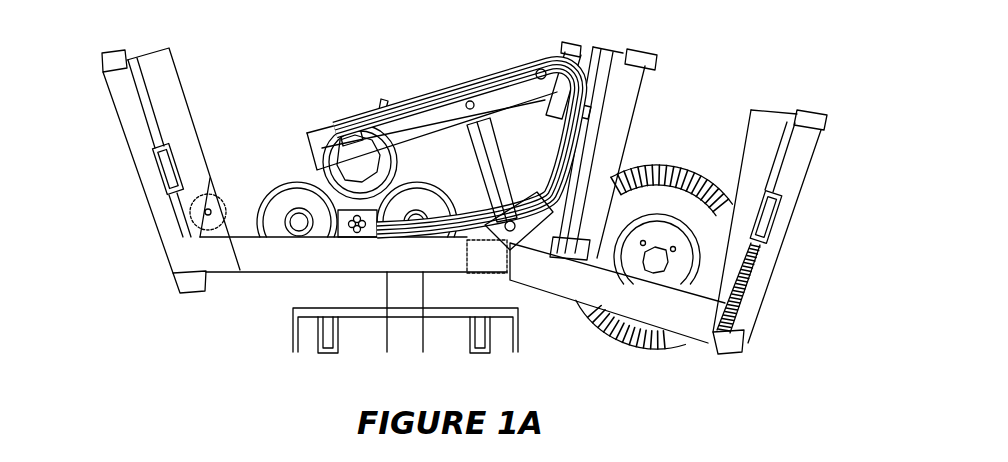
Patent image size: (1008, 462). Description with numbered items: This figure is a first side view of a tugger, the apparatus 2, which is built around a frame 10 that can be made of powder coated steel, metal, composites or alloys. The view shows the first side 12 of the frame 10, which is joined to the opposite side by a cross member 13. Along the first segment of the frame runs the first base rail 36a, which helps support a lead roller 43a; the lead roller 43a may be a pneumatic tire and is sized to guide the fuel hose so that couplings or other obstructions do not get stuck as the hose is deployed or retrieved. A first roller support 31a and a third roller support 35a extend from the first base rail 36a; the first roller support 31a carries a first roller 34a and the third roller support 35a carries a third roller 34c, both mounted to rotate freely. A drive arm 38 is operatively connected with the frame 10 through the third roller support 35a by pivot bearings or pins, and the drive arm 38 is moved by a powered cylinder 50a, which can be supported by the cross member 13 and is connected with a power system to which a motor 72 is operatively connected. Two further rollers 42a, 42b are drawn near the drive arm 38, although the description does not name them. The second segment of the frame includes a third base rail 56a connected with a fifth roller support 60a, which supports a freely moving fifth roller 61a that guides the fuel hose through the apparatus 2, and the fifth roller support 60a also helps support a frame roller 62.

The apparatus 2 is at (858, 47).
The frame 10 is at (225, 279).
The first side 12 is at (332, 267).
The cross member 13 is at (458, 262).
The first roller support 31a is at (747, 137).
The first roller 34a is at (808, 163).
The third roller 34c is at (614, 97).
The third roller support 35a is at (594, 48).
The first base rail 36a is at (533, 288).
The drive arm 38 is at (330, 134).
The roller 42a is at (419, 182).
The roller 42b is at (294, 183).
The lead roller 43a is at (684, 171).
The powered cylinder 50a is at (497, 158).
The third base rail 56a is at (275, 274).
The fifth roller support 60a is at (180, 100).
The fifth roller 61a is at (118, 113).
The frame roller 62 is at (216, 176).
The motor 72 is at (310, 152).